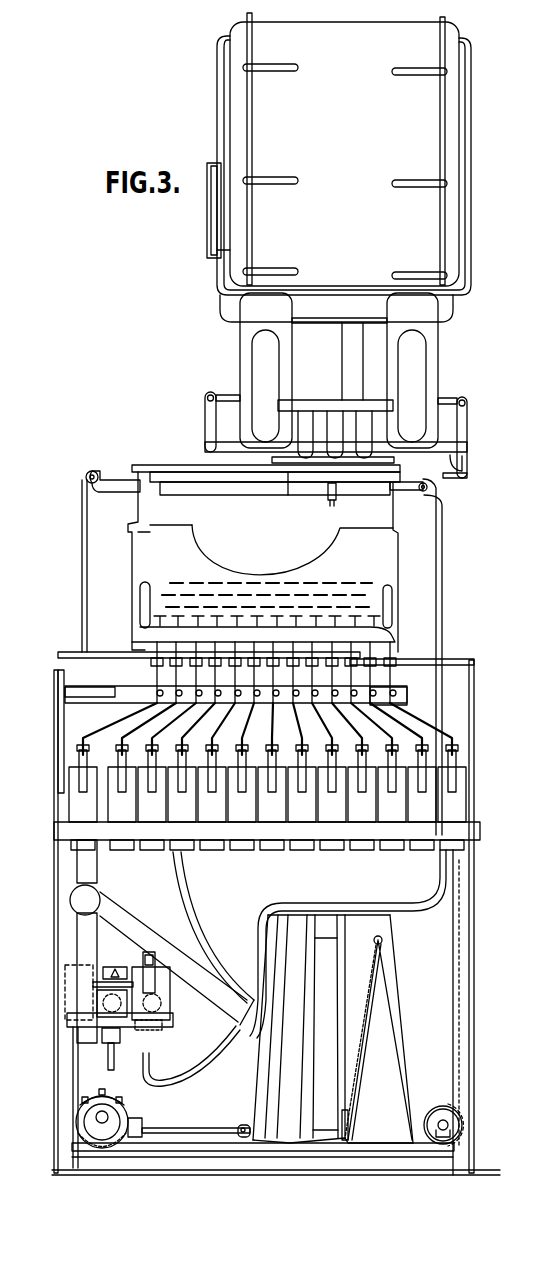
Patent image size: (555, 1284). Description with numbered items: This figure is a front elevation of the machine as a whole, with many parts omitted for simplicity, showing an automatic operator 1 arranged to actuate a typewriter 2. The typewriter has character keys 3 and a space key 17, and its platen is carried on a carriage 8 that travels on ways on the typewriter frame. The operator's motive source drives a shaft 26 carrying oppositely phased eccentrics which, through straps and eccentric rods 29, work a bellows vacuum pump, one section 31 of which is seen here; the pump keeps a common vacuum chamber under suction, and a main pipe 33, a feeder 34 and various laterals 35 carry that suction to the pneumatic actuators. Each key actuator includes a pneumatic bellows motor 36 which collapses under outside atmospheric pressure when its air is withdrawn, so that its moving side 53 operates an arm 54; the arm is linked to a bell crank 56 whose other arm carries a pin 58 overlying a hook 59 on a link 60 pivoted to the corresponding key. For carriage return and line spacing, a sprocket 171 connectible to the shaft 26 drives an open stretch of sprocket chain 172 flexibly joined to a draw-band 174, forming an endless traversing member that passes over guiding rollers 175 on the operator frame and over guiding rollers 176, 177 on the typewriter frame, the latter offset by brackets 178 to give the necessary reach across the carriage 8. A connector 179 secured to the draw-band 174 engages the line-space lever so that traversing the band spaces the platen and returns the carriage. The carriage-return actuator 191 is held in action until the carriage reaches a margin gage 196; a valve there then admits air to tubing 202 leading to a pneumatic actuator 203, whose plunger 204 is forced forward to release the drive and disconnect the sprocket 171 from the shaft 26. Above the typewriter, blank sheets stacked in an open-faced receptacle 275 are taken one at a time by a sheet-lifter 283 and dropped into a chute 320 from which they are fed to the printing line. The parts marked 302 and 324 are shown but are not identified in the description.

The operator 1 is at (264, 558).
The typewriter 2 is at (54, 823).
The character keys 3 is at (365, 607).
The carriage 8 is at (456, 472).
The space key 17 is at (300, 630).
The shaft 26 is at (120, 1118).
The eccentric rods 29 is at (206, 1128).
The bellows vacuum pump section 31 is at (265, 1082).
The main pipe 33 is at (150, 925).
The feeder 34 is at (100, 898).
The laterals 35 is at (77, 865).
The pneumatic bellows motor 36 is at (195, 800).
The moving side 53 is at (395, 812).
The arm 54 is at (80, 760).
The bell crank 56 is at (440, 728).
The pin 58 is at (385, 695).
The hook 59 is at (155, 698).
The link 60 is at (355, 660).
The sprocket 171 is at (105, 1095).
The sprocket chain 172 is at (75, 1065).
The draw-band 174 is at (82, 565).
The guiding rollers 175 is at (440, 1107).
The guiding roller 176 is at (90, 473).
The guiding roller 177 is at (432, 486).
The brackets 178 is at (113, 484).
The connector 179 is at (289, 488).
The actuator 191 is at (75, 1030).
The margin gage 196 is at (331, 500).
The tubing 202 is at (258, 930).
The pneumatic actuator 203 is at (165, 1037).
The plunger 204 is at (145, 956).
The open-faced receptacle 275 is at (442, 145).
The sheet-lifter 283 is at (471, 212).
The rods 302 is at (443, 585).
The chute 320 is at (438, 358).
The cross bar 324 is at (312, 402).